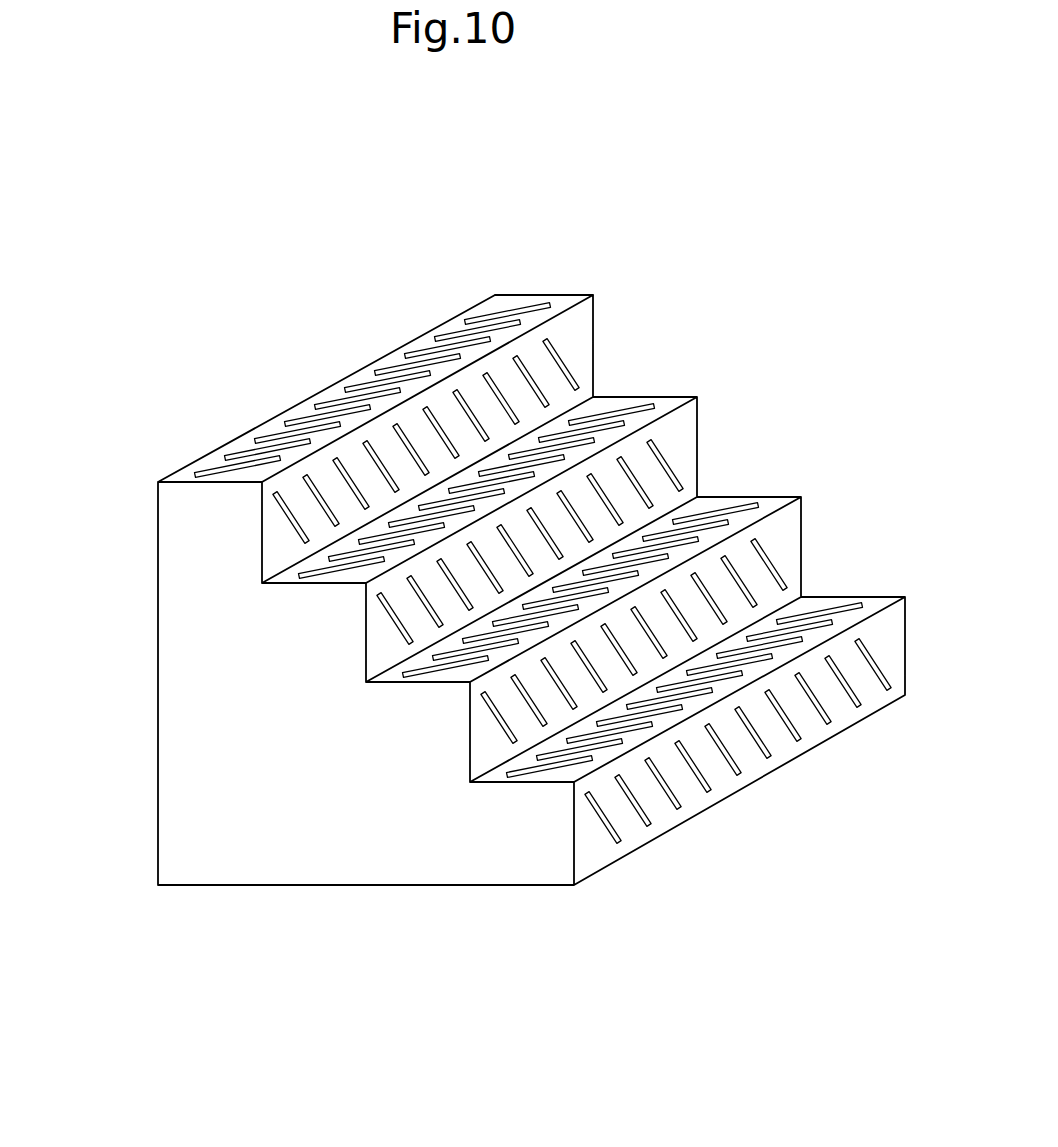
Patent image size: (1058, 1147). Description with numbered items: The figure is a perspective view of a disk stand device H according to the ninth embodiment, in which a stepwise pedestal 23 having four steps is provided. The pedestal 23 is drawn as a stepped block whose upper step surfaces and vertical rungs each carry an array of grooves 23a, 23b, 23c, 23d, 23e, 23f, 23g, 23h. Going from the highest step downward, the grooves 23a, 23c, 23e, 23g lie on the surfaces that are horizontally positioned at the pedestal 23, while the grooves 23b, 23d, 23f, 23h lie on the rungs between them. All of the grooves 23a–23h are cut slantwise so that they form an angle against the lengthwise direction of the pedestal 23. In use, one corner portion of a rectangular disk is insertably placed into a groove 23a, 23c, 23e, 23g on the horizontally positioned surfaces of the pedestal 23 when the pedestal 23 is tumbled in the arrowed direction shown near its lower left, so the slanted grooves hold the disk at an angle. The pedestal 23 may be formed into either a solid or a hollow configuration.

The stepwise pedestal 23 is at (222, 941).
The groove 23a is at (330, 398).
The groove 23b is at (548, 388).
The groove 23c is at (623, 413).
The groove 23d is at (648, 492).
The groove 23e is at (737, 507).
The groove 23f is at (750, 588).
The groove 23g is at (810, 627).
The groove 23h is at (888, 687).
The disk stand device H is at (555, 272).